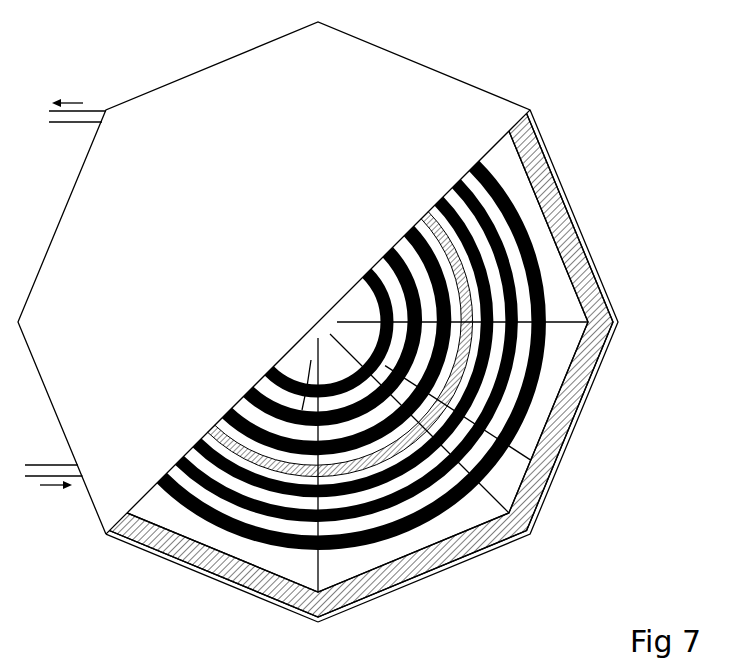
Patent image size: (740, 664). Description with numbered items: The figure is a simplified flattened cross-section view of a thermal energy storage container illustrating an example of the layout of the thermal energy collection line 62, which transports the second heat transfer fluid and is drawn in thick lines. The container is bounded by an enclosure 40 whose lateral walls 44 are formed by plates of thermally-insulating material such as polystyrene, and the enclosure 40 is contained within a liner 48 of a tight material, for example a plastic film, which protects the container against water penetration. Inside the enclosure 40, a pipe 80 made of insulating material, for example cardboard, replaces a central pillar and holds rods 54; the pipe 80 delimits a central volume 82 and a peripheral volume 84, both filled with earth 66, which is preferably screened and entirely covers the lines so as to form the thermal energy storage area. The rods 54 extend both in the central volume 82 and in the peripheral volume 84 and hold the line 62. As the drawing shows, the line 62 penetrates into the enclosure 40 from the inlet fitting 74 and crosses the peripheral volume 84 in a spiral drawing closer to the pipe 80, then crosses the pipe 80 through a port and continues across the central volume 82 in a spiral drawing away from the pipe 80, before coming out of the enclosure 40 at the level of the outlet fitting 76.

The enclosure 40 is at (592, 245).
The lateral walls 44 is at (578, 222).
The liner 48 is at (558, 172).
The rods 54 is at (563, 330).
The thermal energy collection line 62 is at (420, 532).
The earth 66 is at (337, 570).
The inlet fitting 74 is at (31, 478).
The outlet fitting 76 is at (93, 110).
The pipe 80 is at (513, 450).
The central volume 82 is at (148, 550).
The peripheral volume 84 is at (262, 555).